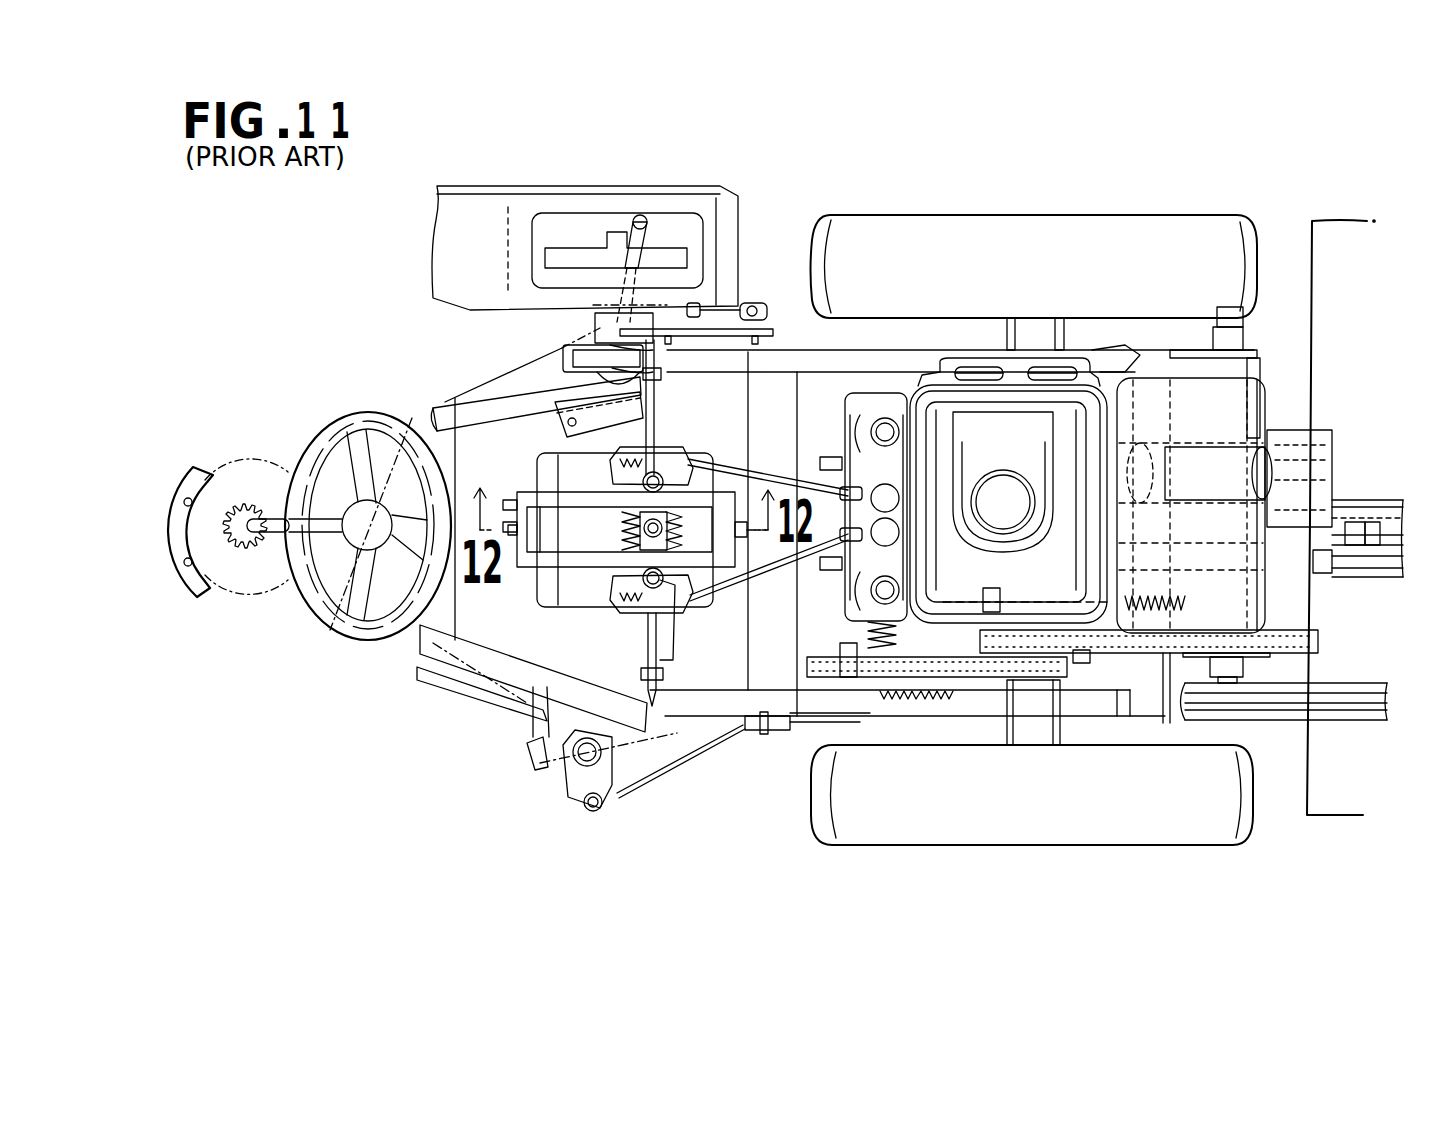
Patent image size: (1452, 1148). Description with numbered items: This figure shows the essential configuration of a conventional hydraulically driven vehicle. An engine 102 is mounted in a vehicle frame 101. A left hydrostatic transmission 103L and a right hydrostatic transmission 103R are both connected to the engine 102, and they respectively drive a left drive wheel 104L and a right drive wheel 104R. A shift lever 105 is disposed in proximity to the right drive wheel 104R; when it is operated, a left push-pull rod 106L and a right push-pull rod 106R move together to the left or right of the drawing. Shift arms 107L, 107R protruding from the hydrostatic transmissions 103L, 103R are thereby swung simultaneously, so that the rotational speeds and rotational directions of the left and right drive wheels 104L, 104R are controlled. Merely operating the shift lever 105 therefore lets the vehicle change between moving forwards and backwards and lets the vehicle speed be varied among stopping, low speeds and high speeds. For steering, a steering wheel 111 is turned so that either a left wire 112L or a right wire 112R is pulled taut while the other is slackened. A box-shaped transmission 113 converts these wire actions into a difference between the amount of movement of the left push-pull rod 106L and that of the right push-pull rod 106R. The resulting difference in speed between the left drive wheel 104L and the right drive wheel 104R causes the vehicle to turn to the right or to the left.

The vehicle frame 101 is at (807, 357).
The engine 102 is at (1010, 423).
The right hydrostatic transmission 103R is at (880, 405).
The left hydrostatic transmission 103L is at (878, 618).
The right drive wheel 104R is at (1128, 238).
The left drive wheel 104L is at (1118, 818).
The shift lever 105 is at (640, 216).
The right push-pull rod 106R is at (762, 476).
The left push-pull rod 106L is at (776, 568).
The right shift arm 107R is at (870, 492).
The left shift arm 107L is at (880, 562).
The steering wheel 111 is at (352, 423).
The right wire 112R is at (465, 395).
The left wire 112L is at (473, 687).
The box-shaped transmission 113 is at (548, 620).